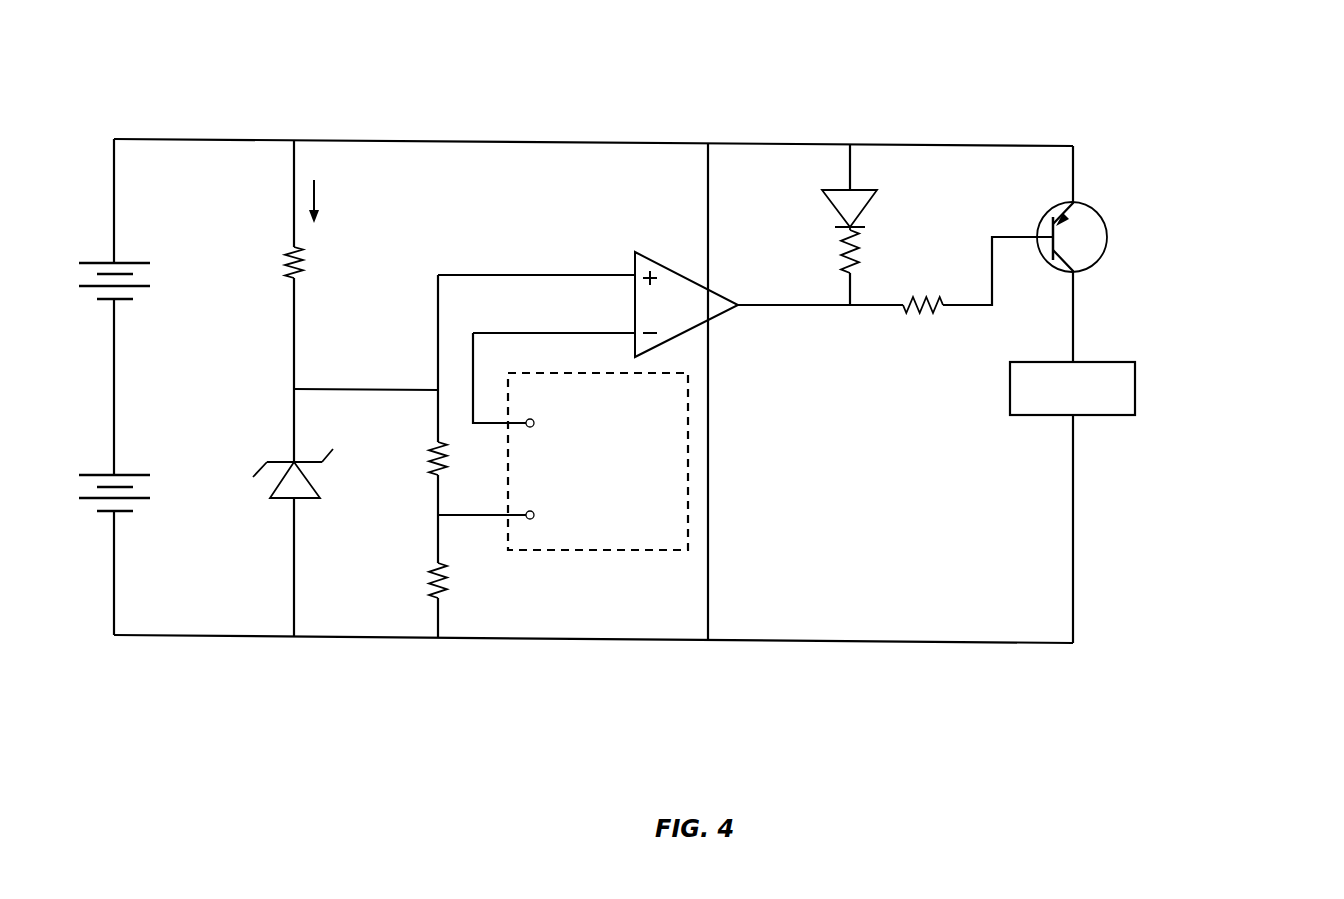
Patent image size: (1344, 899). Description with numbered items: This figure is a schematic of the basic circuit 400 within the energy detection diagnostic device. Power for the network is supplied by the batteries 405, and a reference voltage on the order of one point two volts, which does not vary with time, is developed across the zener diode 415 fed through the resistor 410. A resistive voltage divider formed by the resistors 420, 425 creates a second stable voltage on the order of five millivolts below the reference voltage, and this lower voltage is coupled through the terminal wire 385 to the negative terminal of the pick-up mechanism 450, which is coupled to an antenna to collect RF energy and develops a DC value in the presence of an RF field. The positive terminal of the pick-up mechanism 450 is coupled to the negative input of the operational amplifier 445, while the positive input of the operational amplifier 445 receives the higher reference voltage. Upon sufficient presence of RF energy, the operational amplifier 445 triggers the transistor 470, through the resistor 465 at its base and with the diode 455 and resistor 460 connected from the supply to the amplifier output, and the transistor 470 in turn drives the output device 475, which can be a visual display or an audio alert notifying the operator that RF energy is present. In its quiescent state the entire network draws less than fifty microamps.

The circuit 400 is at (182, 118).
The battery 405 is at (90, 287).
The resistor 410 is at (288, 280).
The zener diode 415 is at (273, 485).
The resistive voltage divider resistor 420 is at (432, 475).
The resistive voltage divider resistor 425 is at (432, 598).
The terminal b wire 385 is at (466, 514).
The operational amplifier 445 is at (690, 273).
The diode 455 is at (873, 207).
The resistor 460 is at (842, 272).
The resistor 465 is at (938, 297).
The transistor 470 is at (1057, 205).
The output device 475 is at (1033, 417).
The pick-up mechanism 450 is at (583, 552).